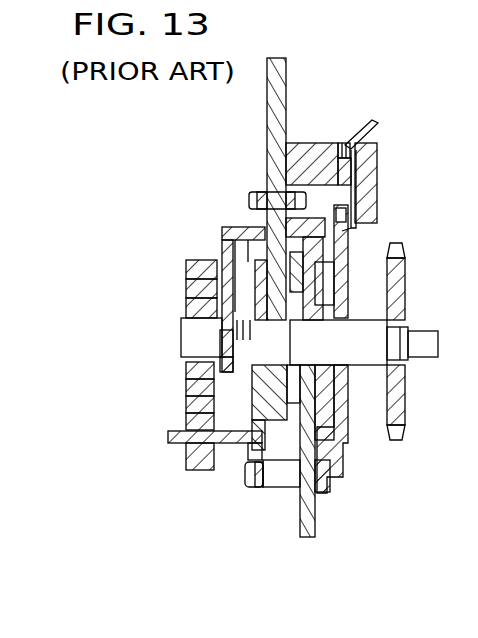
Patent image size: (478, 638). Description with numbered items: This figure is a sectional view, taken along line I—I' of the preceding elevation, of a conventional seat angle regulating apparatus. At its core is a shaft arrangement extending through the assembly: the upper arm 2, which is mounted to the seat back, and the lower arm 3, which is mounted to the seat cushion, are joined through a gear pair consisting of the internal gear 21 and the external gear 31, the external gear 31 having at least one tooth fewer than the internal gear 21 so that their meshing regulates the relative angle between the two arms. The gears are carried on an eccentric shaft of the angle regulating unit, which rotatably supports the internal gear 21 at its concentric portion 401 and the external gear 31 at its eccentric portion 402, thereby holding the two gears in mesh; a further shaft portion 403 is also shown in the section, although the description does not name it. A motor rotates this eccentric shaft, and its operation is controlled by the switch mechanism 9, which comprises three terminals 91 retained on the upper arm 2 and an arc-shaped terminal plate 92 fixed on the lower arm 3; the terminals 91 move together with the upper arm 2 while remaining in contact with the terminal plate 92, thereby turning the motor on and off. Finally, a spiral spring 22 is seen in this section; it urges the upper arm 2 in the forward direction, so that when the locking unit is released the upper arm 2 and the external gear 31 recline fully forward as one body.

The upper arm 2 is at (287, 82).
The lower arm 3 is at (300, 510).
The switch mechanism 9 is at (392, 163).
The terminals 91 is at (357, 232).
The arc-shaped terminal plate 92 is at (358, 229).
The spiral spring 22 is at (191, 258).
The internal gear 21 is at (258, 400).
The external gear 31 is at (255, 383).
The concentric portion 401 is at (265, 330).
The eccentric portion 402 is at (280, 307).
The bobbin shaft 403 is at (358, 338).